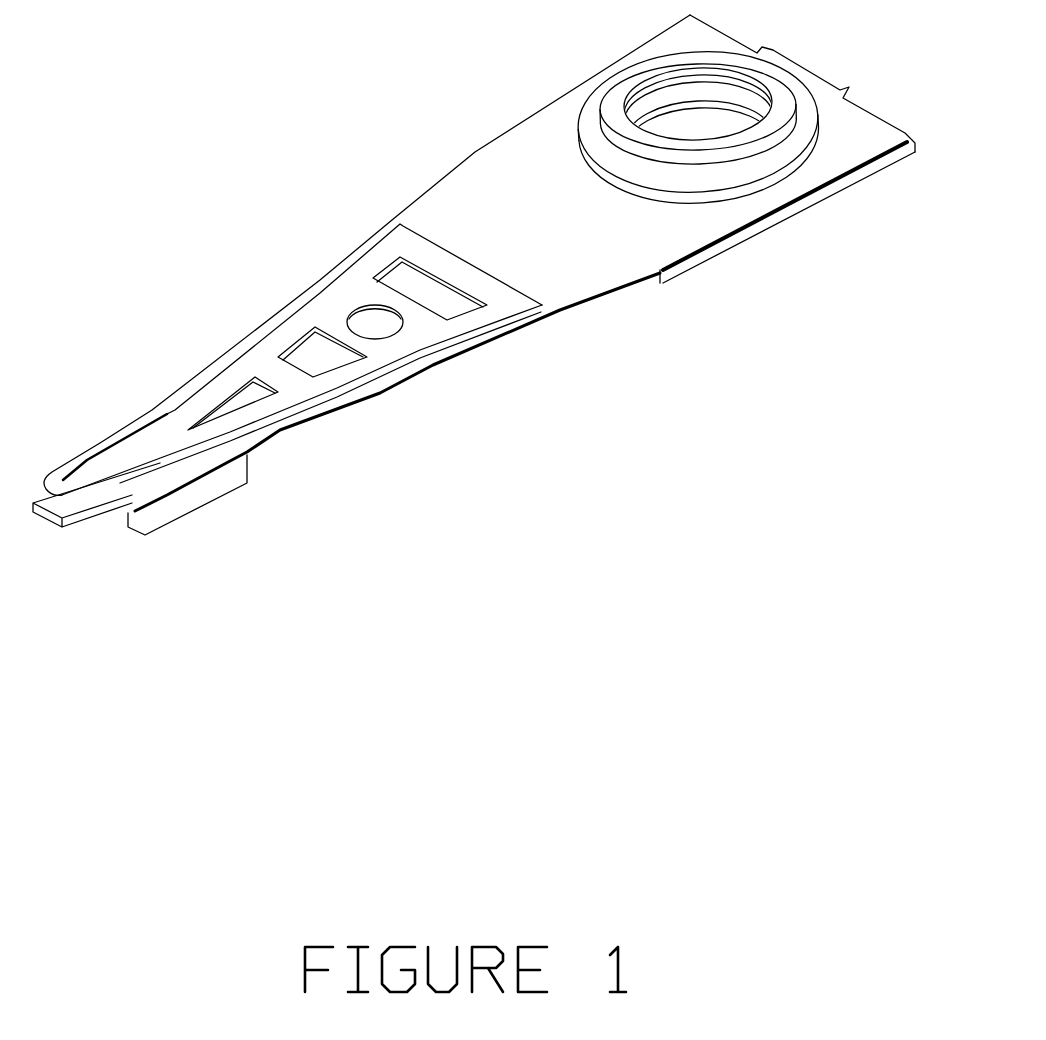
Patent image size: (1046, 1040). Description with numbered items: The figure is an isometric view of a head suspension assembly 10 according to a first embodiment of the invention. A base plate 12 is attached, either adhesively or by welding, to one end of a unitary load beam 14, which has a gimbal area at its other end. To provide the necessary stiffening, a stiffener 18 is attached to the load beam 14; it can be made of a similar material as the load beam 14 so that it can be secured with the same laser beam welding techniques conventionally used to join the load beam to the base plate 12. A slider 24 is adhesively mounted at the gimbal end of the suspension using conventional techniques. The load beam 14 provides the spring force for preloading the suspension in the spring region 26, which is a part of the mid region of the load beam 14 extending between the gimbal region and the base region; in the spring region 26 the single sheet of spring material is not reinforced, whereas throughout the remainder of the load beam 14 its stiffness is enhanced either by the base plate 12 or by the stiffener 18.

The head suspension assembly 10 is at (272, 205).
The base plate 12 is at (657, 283).
The load beam 14 is at (361, 271).
The stiffener 18 is at (437, 344).
The slider 24 is at (177, 502).
The spring region 26 is at (575, 270).